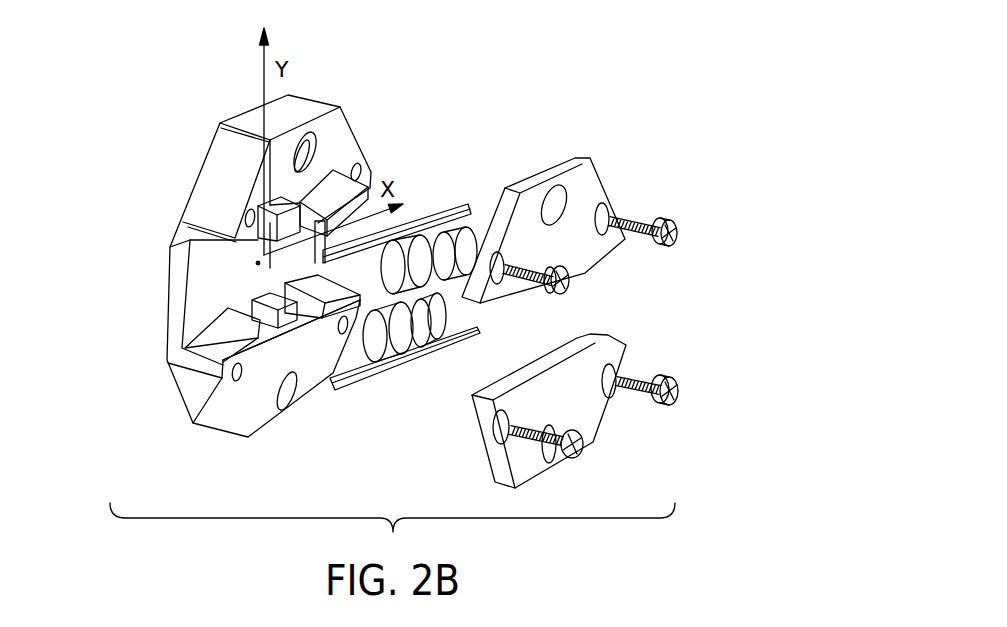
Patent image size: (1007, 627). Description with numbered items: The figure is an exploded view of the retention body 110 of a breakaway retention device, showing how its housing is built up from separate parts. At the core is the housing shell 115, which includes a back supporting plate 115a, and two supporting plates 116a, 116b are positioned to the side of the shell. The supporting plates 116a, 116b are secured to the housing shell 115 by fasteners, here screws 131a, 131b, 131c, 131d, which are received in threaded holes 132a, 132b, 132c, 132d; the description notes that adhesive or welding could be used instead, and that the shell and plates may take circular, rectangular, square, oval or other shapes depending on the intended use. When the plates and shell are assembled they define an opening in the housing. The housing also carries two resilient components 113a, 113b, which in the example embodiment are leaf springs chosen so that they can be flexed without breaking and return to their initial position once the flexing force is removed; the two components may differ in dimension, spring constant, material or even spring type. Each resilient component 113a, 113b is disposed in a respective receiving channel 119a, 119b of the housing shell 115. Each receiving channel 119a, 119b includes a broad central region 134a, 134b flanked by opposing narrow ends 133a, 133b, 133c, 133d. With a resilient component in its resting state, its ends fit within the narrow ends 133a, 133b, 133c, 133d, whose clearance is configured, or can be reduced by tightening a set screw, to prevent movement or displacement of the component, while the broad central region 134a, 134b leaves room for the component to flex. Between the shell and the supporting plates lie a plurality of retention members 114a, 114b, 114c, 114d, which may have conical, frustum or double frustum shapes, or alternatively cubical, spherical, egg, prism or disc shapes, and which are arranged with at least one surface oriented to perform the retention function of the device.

The retention body 110 is at (152, 92).
The resilient component 113a is at (430, 207).
The resilient component 113b is at (340, 385).
The retention member 114a is at (415, 232).
The retention member 114b is at (470, 225).
The retention member 114c is at (393, 356).
The retention member 114d is at (428, 345).
The housing shell 115 is at (226, 171).
The back supporting plate 115a is at (185, 276).
The supporting plate 116a is at (597, 192).
The supporting plate 116b is at (613, 350).
The receiving channel 119a is at (312, 143).
The receiving channel 119b is at (268, 342).
The screw 131a is at (568, 285).
The screw 131b is at (678, 243).
The screw 131c is at (582, 450).
The screw 131d is at (684, 393).
The threaded hole 132a is at (501, 279).
The threaded hole 132b is at (605, 235).
The threaded hole 132c is at (490, 439).
The threaded hole 132d is at (611, 404).
The narrow end 133a is at (210, 225).
The narrow end 133b is at (362, 167).
The narrow end 133c is at (222, 361).
The narrow end 133d is at (347, 318).
The broad central region 134a is at (282, 202).
The broad central region 134b is at (280, 354).